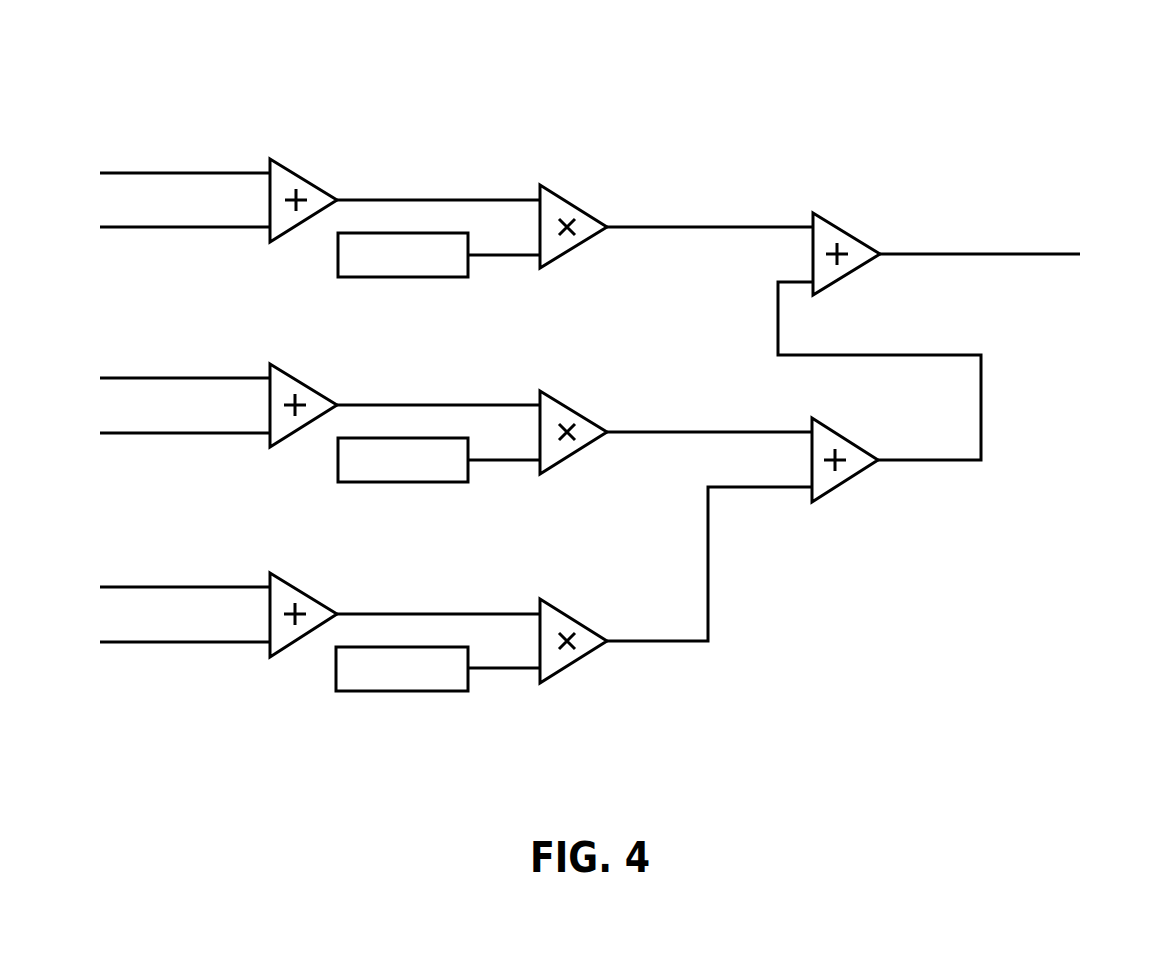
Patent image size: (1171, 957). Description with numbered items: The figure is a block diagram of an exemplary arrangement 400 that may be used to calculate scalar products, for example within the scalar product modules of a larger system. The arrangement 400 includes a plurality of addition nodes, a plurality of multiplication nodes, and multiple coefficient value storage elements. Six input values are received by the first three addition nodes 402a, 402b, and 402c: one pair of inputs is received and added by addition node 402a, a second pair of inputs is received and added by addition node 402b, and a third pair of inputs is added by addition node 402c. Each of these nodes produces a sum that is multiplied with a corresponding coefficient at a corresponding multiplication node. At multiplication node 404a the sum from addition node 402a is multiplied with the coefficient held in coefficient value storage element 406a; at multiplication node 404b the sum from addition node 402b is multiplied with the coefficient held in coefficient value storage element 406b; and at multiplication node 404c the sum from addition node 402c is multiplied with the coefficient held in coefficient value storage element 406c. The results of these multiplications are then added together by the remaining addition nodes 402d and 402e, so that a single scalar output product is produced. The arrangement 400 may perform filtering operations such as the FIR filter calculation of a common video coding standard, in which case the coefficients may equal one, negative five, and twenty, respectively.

The arrangement 400 is at (1086, 44).
The addition node 402a is at (303, 173).
The addition node 402b is at (303, 377).
The addition node 402c is at (303, 587).
The addition node 402d is at (843, 228).
The addition node 402e is at (844, 435).
The multiplication node 404a is at (587, 207).
The multiplication node 404b is at (587, 411).
The multiplication node 404c is at (587, 621).
The coefficient value storage element 406a is at (422, 277).
The coefficient value storage element 406b is at (422, 482).
The coefficient value storage element 406c is at (422, 691).